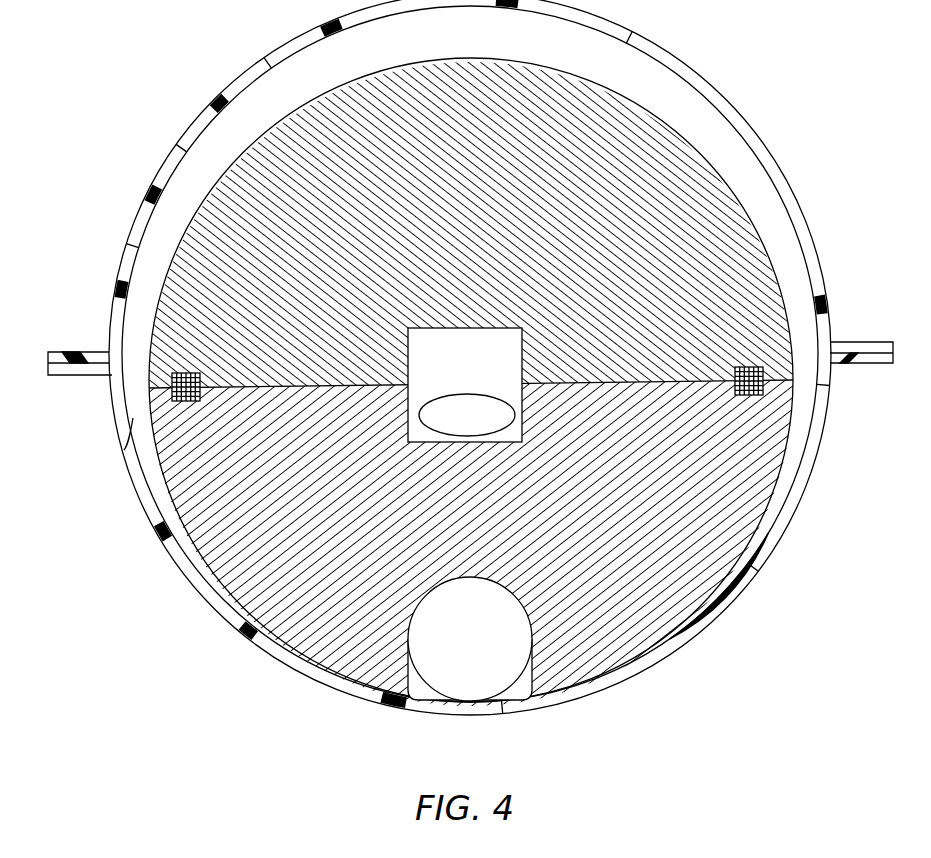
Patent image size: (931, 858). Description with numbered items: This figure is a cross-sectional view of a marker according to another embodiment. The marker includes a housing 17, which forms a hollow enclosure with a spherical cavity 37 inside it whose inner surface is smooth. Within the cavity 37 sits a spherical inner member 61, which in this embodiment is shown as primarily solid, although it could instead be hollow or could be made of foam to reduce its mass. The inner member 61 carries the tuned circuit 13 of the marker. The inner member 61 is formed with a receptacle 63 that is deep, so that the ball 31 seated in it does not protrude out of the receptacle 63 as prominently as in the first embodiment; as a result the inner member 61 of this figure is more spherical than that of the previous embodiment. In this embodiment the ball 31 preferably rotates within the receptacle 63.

The housing 17 is at (163, 170).
The cavity 37 is at (133, 422).
The spherical inner member 61 is at (373, 100).
The receptacle 63 is at (522, 608).
The tuned circuit 13 is at (186, 402).
The ball 31 is at (432, 652).